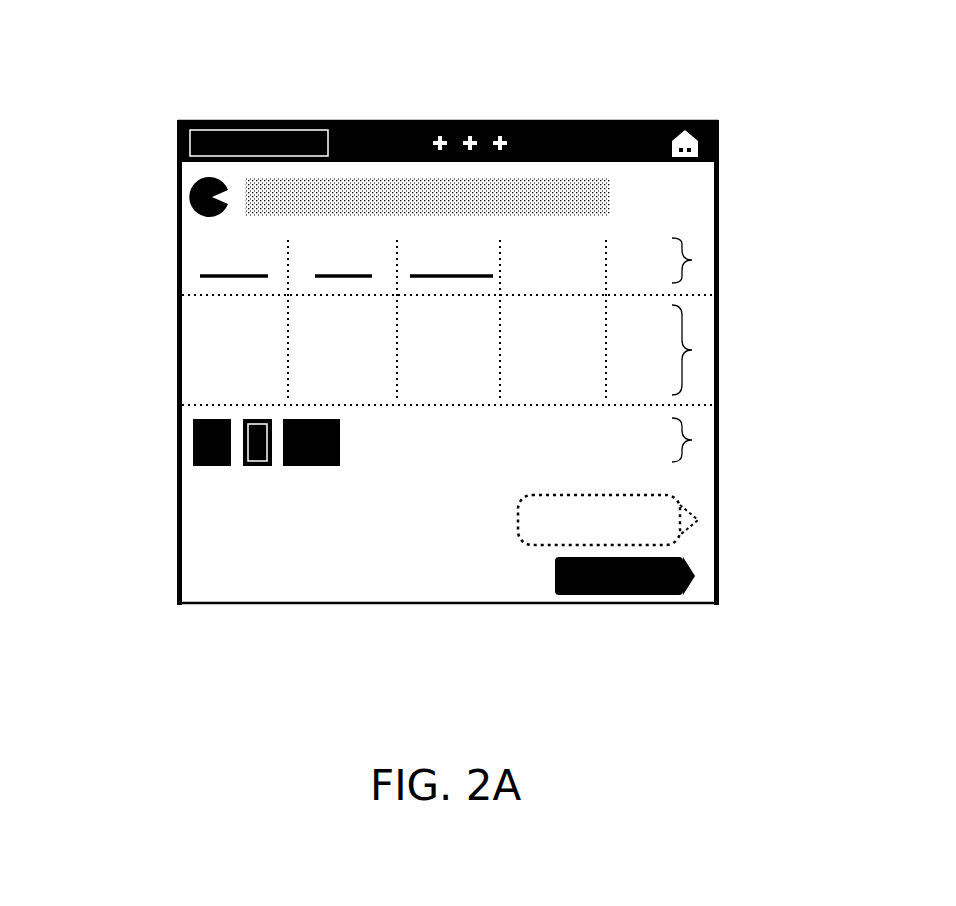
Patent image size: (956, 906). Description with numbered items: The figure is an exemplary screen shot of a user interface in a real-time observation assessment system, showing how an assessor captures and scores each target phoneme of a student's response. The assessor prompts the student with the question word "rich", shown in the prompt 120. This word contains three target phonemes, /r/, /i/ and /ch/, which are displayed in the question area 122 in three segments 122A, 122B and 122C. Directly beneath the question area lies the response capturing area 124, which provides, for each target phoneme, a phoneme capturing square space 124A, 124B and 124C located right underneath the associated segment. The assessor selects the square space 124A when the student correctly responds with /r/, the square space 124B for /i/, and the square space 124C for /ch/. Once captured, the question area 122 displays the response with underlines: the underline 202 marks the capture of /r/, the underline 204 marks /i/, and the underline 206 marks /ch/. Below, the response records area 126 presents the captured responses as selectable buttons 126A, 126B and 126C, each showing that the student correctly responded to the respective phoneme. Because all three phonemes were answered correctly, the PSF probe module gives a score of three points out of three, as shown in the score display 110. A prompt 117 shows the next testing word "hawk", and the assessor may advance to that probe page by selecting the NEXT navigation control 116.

The score display 110 is at (720, 143).
The NEXT navigation control 116 is at (695, 580).
The prompt for next testing word 117 is at (645, 507).
The prompt 120 is at (278, 190).
The question area 122 is at (692, 260).
The target phoneme segment 122A is at (205, 254).
The target phoneme segment 122B is at (352, 245).
The target phoneme segment 122C is at (450, 245).
The response capturing area 124 is at (692, 350).
The phoneme capturing square space 124A is at (240, 352).
The phoneme capturing square space 124B is at (343, 352).
The phoneme capturing square space 124C is at (443, 352).
The response records area 126 is at (692, 440).
The selectable button 126A is at (193, 434).
The selectable button 126B is at (252, 466).
The selectable button 126C is at (310, 466).
The underline 202 is at (220, 278).
The underline 204 is at (327, 280).
The underline 206 is at (458, 279).